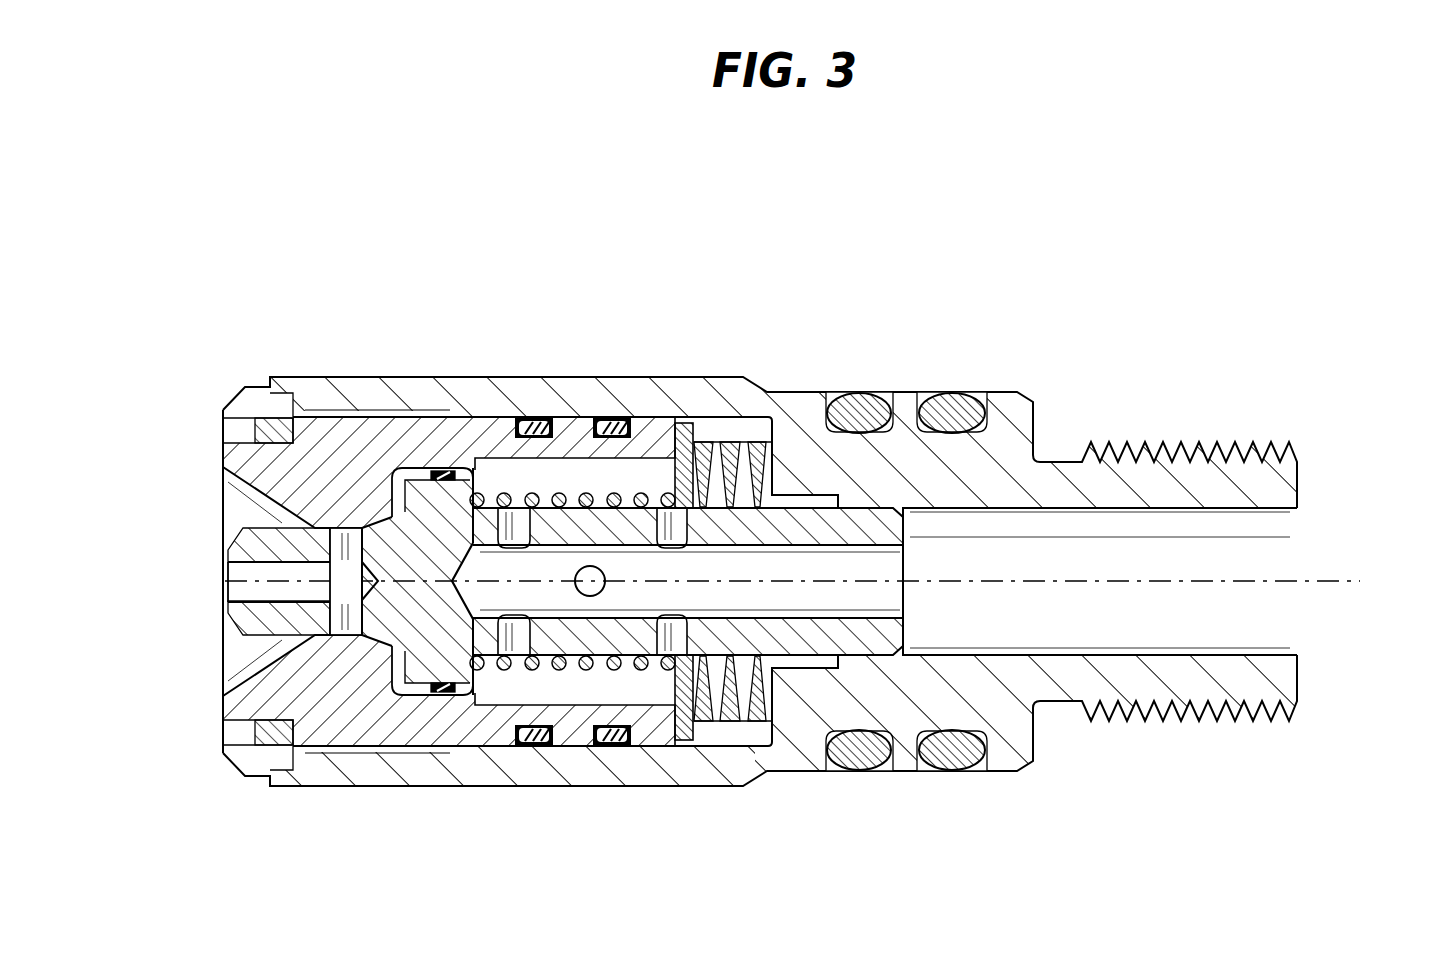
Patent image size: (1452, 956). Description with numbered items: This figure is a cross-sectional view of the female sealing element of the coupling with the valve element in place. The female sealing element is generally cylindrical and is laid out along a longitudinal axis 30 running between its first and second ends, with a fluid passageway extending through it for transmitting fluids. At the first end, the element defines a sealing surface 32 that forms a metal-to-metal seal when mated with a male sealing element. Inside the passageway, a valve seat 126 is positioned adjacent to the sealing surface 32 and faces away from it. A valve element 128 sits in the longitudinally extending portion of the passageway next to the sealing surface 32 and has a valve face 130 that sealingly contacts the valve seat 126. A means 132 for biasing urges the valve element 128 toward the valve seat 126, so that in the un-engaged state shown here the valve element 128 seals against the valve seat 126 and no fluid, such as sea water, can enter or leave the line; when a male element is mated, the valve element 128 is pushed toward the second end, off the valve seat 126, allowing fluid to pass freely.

The longitudinal axis 30 is at (1333, 581).
The sealing surface 32 is at (247, 680).
The valve seat 126 is at (392, 487).
The valve element 128 is at (443, 508).
The valve face 130 is at (408, 697).
The means for biasing 132 is at (627, 495).